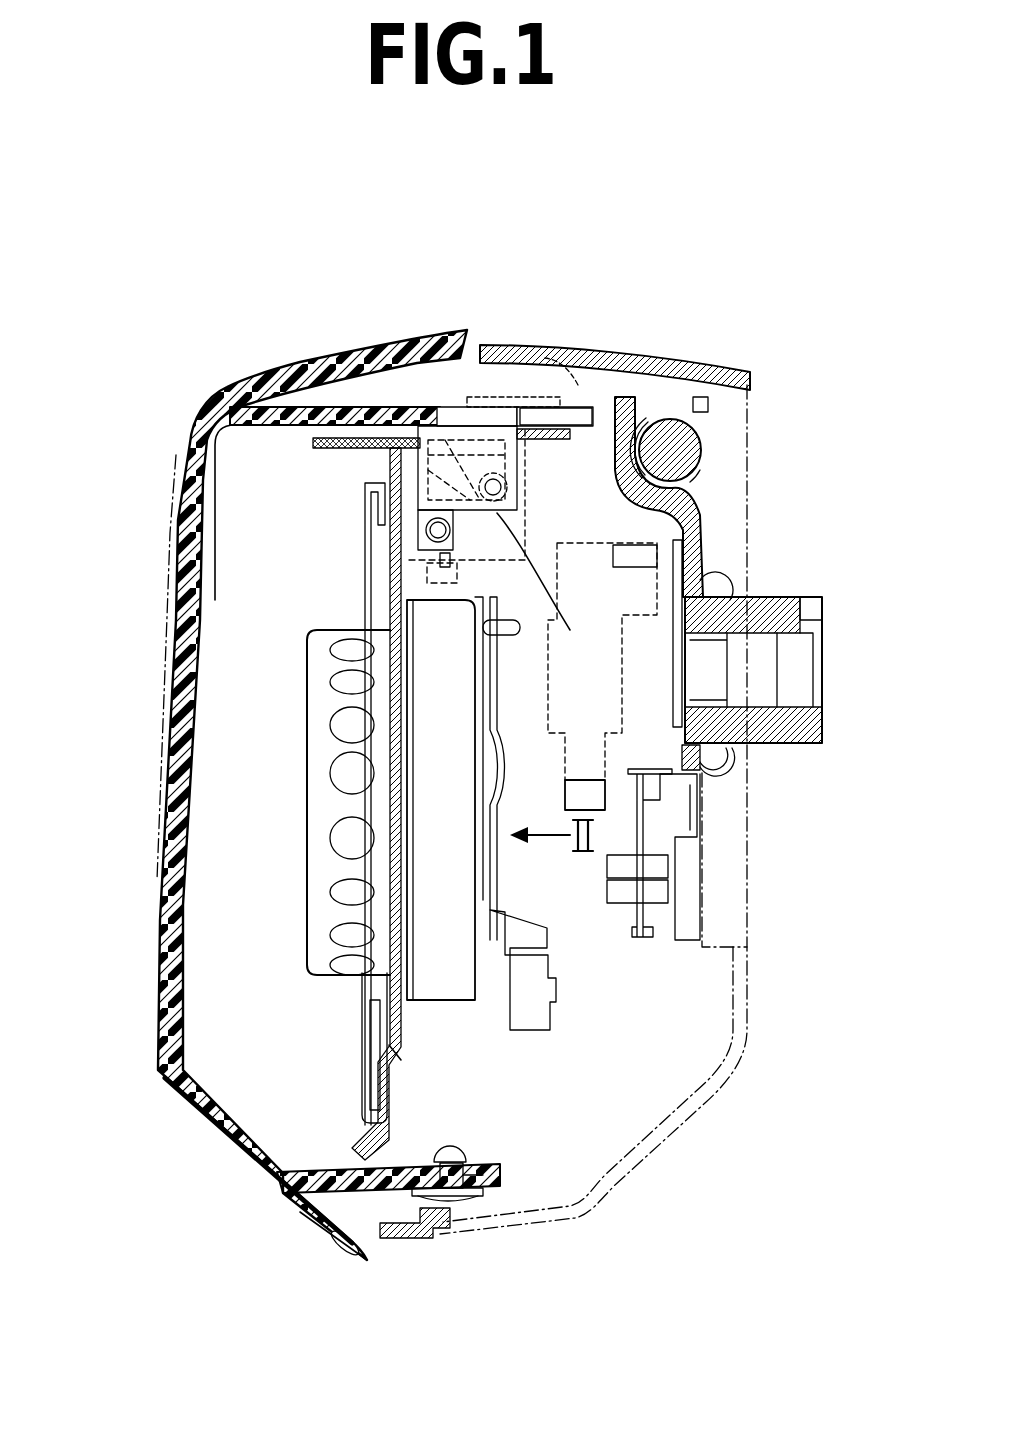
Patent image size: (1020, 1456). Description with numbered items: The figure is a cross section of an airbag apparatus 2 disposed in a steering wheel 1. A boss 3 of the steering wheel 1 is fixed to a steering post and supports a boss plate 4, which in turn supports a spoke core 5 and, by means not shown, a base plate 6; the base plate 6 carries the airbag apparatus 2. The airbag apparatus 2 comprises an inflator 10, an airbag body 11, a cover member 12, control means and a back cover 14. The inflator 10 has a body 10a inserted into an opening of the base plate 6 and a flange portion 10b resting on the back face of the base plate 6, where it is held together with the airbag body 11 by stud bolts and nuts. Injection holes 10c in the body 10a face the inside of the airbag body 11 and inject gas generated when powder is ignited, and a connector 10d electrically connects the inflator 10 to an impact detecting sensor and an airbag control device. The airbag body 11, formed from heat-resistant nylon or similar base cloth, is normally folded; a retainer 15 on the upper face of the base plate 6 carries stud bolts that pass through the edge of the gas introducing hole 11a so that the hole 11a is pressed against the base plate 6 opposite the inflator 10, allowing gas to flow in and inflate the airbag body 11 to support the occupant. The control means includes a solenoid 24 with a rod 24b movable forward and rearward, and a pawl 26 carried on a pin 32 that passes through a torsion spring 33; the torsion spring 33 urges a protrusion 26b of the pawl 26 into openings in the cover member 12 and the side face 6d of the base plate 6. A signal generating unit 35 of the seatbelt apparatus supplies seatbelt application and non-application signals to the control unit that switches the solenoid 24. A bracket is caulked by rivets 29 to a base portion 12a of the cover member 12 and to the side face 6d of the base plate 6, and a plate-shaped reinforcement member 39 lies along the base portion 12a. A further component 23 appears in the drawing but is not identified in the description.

The steering wheel 1 is at (722, 428).
The airbag apparatus 2 is at (243, 350).
The boss 3 is at (790, 605).
The boss plate 4 is at (715, 520).
The spoke core 5 is at (702, 445).
The base plate 6 is at (395, 1100).
The side face 6d is at (470, 1180).
The inflator 10 is at (297, 616).
The body 10a is at (307, 730).
The flange portion 10b is at (480, 905).
The injection holes 10c is at (352, 845).
The connector 10d is at (535, 1000).
The airbag body 11 is at (350, 450).
The gas introducing hole 11a is at (400, 1048).
The cover member 12 is at (180, 414).
The base portion 12a is at (365, 1195).
The back cover 14 is at (700, 365).
The retainer 15 is at (380, 1070).
The top wall 23 is at (446, 388).
The solenoid 24 is at (452, 592).
The rod 24b is at (560, 625).
The pawl 26 is at (505, 530).
The protrusion 26b is at (517, 405).
The rivets 29 is at (555, 405).
The pin 32 is at (503, 487).
The torsion spring 33 is at (530, 560).
The signal generating unit 35 is at (418, 480).
The reinforcement member 39 is at (578, 385).